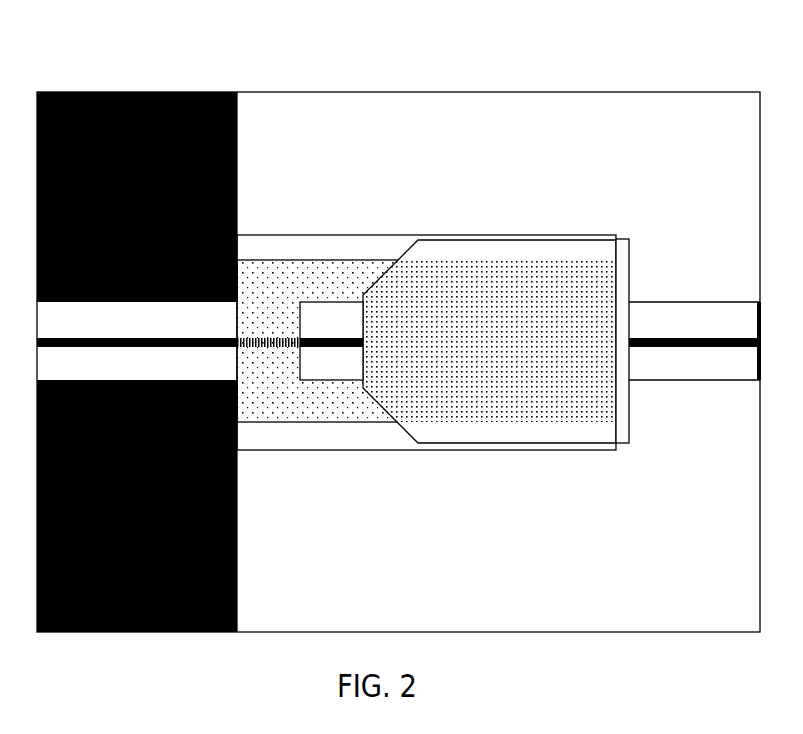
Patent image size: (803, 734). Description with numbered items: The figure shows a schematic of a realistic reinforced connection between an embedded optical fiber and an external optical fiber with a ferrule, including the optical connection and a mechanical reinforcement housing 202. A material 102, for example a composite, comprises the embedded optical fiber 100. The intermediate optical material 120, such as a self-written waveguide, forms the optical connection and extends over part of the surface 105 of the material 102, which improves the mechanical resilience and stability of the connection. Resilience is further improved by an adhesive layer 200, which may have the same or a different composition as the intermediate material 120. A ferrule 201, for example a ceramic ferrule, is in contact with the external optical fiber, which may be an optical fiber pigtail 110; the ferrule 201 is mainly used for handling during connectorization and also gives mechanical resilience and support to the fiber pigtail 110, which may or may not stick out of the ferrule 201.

The embedded optical fiber 100 is at (118, 300).
The material 102 is at (120, 547).
The surface 105 is at (240, 558).
The optical fiber pigtail 110 is at (337, 305).
The intermediate optical material 120 is at (285, 425).
The adhesive layer 200 is at (118, 41).
The ferrule 201 is at (629, 425).
The reinforcement housing 202 is at (685, 170).